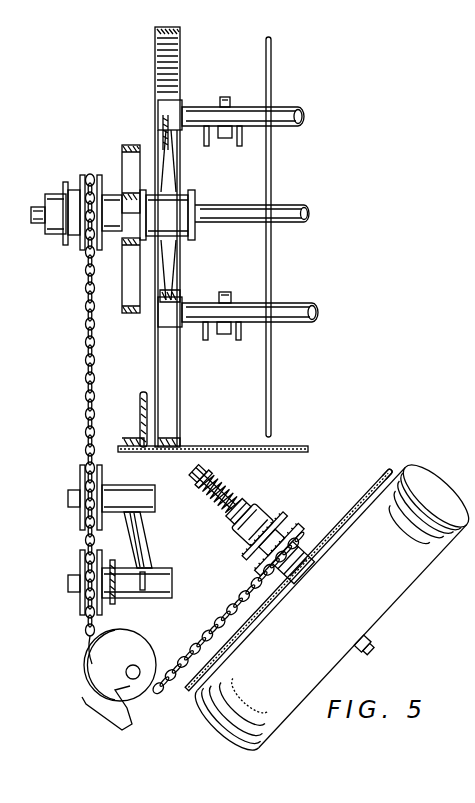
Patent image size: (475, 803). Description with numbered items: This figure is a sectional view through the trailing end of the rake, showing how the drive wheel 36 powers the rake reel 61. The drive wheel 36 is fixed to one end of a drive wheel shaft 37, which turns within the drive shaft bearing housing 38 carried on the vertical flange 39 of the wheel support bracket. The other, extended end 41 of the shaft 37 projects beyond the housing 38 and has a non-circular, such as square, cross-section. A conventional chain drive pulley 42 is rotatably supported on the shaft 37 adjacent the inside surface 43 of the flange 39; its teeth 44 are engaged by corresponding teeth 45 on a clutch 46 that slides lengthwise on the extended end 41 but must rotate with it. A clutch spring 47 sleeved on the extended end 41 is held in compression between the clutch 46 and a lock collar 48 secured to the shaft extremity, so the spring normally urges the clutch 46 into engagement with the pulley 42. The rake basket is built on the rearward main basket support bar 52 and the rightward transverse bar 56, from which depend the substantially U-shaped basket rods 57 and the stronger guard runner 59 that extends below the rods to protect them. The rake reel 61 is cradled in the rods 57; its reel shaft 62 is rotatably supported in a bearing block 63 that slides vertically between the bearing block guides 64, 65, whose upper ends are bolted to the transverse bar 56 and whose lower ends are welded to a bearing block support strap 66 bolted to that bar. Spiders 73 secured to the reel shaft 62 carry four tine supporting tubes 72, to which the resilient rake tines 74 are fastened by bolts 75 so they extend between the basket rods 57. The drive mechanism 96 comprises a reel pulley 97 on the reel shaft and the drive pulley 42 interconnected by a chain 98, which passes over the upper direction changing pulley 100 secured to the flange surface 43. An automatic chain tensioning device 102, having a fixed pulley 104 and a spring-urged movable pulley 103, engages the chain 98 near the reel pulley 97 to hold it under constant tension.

The drive wheel 36 is at (429, 488).
The drive wheel shaft 37 is at (370, 643).
The drive shaft bearing housing 38 is at (302, 572).
The vertical flange 39 is at (393, 468).
The extended end of drive shaft 41 is at (230, 497).
The chain drive pulley 42 is at (296, 533).
The inside surface of vertical flange 43 is at (368, 482).
The pulley teeth 44 is at (268, 542).
The clutch teeth 45 is at (262, 522).
The clutch 46 is at (235, 523).
The clutch spring 47 is at (203, 480).
The lock collar 48 is at (210, 473).
The rearward main basket support bar 52 is at (283, 445).
The rightward transverse bar 56 is at (140, 415).
The U-shaped basket rods 57 is at (272, 265).
The guard runner 59 is at (163, 60).
The rake reel 61 is at (293, 200).
The reel shaft 62 is at (297, 213).
The bearing block 63 is at (120, 165).
The bearing block guide 64 is at (118, 158).
The bearing block guide 65 is at (122, 243).
The bearing block support strap 66 is at (129, 144).
The tine supporting tube 72 is at (305, 322).
The spider 73 is at (173, 177).
The rake tine 74 is at (240, 146).
The bolt 75 is at (227, 97).
The drive mechanism 96 is at (72, 460).
The reel pulley 97 is at (41, 162).
The chain 98 is at (87, 342).
The upper direction changing pulley 100 is at (103, 665).
The automatic chain tensioning device 102 is at (72, 518).
The movable pulley 103 is at (85, 480).
The fixed pulley 104 is at (82, 588).